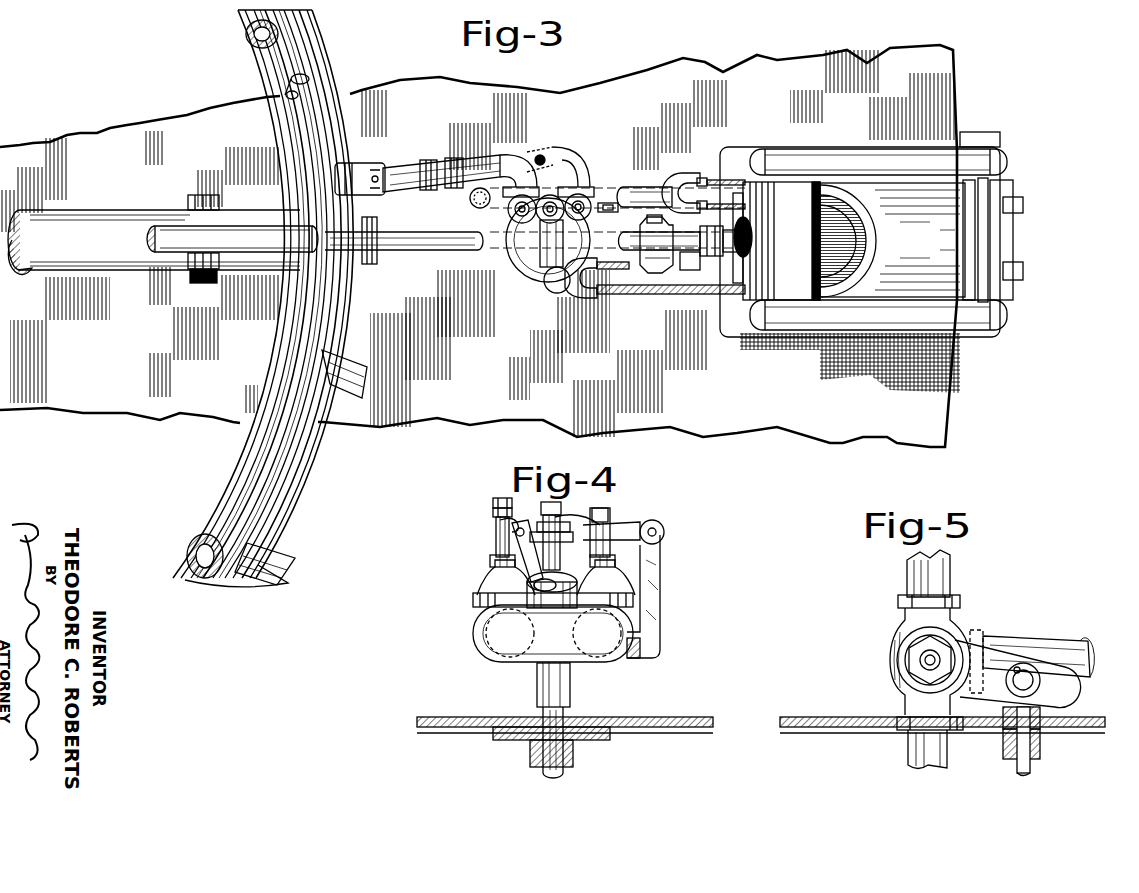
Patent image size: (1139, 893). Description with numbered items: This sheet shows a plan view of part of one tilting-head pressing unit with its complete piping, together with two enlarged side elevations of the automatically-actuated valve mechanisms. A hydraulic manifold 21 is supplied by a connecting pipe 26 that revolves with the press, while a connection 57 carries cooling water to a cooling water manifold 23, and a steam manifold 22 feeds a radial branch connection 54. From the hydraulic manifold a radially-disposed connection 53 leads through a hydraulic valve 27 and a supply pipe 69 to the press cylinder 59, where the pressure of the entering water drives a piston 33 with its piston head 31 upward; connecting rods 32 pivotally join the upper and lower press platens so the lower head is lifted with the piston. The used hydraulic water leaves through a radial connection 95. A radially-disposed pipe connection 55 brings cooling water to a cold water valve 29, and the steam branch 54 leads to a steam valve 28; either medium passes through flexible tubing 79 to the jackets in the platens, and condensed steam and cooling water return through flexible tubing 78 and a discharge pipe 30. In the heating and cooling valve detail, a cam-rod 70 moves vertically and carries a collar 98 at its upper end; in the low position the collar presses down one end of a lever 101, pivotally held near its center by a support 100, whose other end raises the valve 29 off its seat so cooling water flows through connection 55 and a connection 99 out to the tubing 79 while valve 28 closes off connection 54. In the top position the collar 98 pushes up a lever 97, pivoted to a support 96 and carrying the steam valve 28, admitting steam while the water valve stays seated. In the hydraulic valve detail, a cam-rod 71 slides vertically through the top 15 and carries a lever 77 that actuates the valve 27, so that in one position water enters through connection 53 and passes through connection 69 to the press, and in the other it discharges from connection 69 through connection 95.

In FIG. 4, the top 15 is at (460, 717).
In FIG. 5, the top 15 is at (847, 717).
In FIG. 3, the hydraulic manifold 21 is at (302, 115).
In FIG. 3, the steam manifold 22 is at (307, 77).
In FIG. 3, the cooling water manifold 23 is at (307, 25).
In FIG. 3, the connecting pipe 26 is at (232, 239).
In FIG. 3, the hydraulic valve 27 is at (646, 255).
In FIG. 5, the hydraulic valve 27 is at (900, 625).
In FIG. 3, the steam valve 28 is at (588, 216).
In FIG. 4, the steam valve 28 is at (620, 585).
In FIG. 3, the cold water valve 29 is at (505, 211).
In FIG. 4, the cold water valve 29 is at (485, 582).
In FIG. 3, the discharge pipe 30 is at (472, 202).
In FIG. 3, the piston head 31 is at (776, 241).
In FIG. 3, the connecting rods 32 is at (873, 271).
In FIG. 3, the piston 33 is at (848, 241).
In FIG. 3, the radially-disposed connection 53 is at (420, 240).
In FIG. 5, the radially-disposed connection 53 is at (950, 575).
In FIG. 3, the branch connection 54 is at (347, 175).
In FIG. 4, the branch connection 54 is at (633, 658).
In FIG. 3, the radially-disposed pipe connection 55 is at (400, 177).
In FIG. 4, the radially-disposed pipe connection 55 is at (490, 637).
In FIG. 3, the cooling water connection 57 is at (154, 242).
In FIG. 3, the cylinder 59 is at (921, 217).
In FIG. 3, the supply pipe 69 is at (690, 236).
In FIG. 5, the supply pipe 69 is at (1040, 647).
In FIG. 4, the cam-rod 70 is at (565, 715).
In FIG. 5, the cam-rod 71 is at (1032, 752).
In FIG. 5, the lever 77 is at (990, 657).
In FIG. 3, the flexible tubing 78 is at (712, 185).
In FIG. 3, the flexible tubing 79 is at (607, 277).
In FIG. 5, the radial connection 95 is at (918, 748).
In FIG. 3, the support 96 is at (610, 203).
In FIG. 4, the support 96 is at (661, 578).
In FIG. 3, the lever 97 is at (603, 176).
In FIG. 4, the lever 97 is at (567, 522).
In FIG. 4, the collar 98 is at (535, 525).
In FIG. 3, the connection 99 is at (547, 280).
In FIG. 4, the connection 99 is at (559, 582).
In FIG. 4, the support 100 is at (497, 545).
In FIG. 4, the lever 101 is at (498, 527).